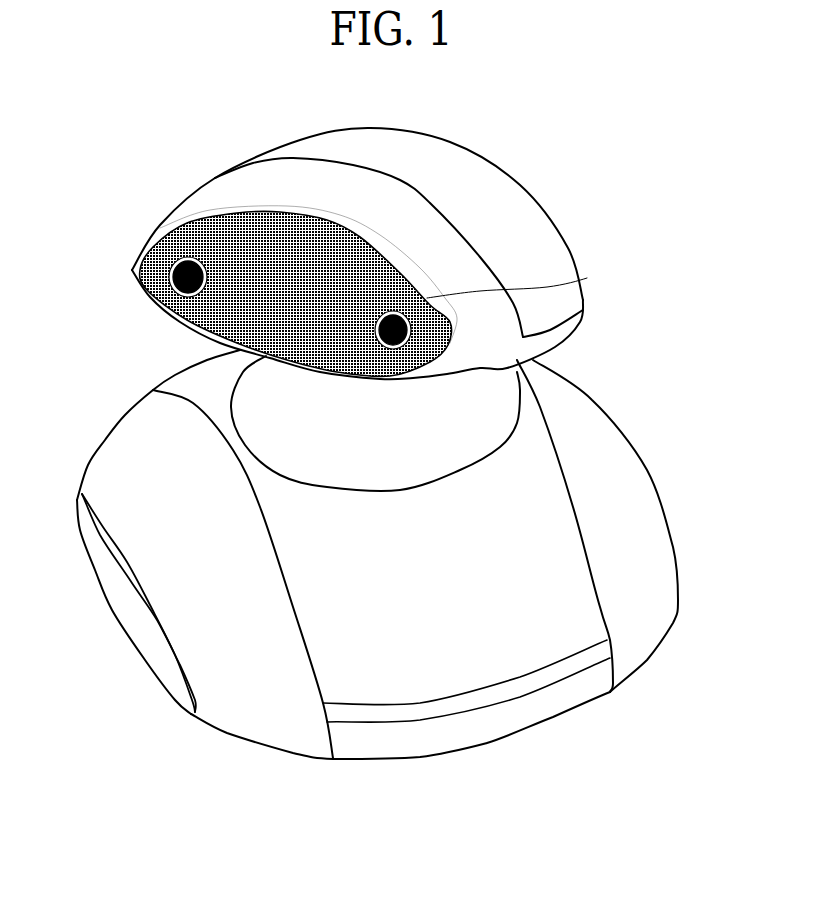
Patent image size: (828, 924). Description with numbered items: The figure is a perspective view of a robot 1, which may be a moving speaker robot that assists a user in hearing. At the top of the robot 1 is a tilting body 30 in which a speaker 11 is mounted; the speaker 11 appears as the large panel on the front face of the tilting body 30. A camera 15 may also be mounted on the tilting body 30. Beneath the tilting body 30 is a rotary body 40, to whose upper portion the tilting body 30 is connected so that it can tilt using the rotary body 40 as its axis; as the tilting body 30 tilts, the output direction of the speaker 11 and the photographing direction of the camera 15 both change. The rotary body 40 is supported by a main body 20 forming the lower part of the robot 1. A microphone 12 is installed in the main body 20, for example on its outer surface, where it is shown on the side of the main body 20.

The robot 1 is at (508, 171).
The speaker 11 is at (248, 237).
The microphone 12 is at (116, 603).
The camera 15 is at (587, 278).
The main body 20 is at (642, 487).
The tilting body 30 is at (542, 224).
The rotary body 40 is at (503, 410).